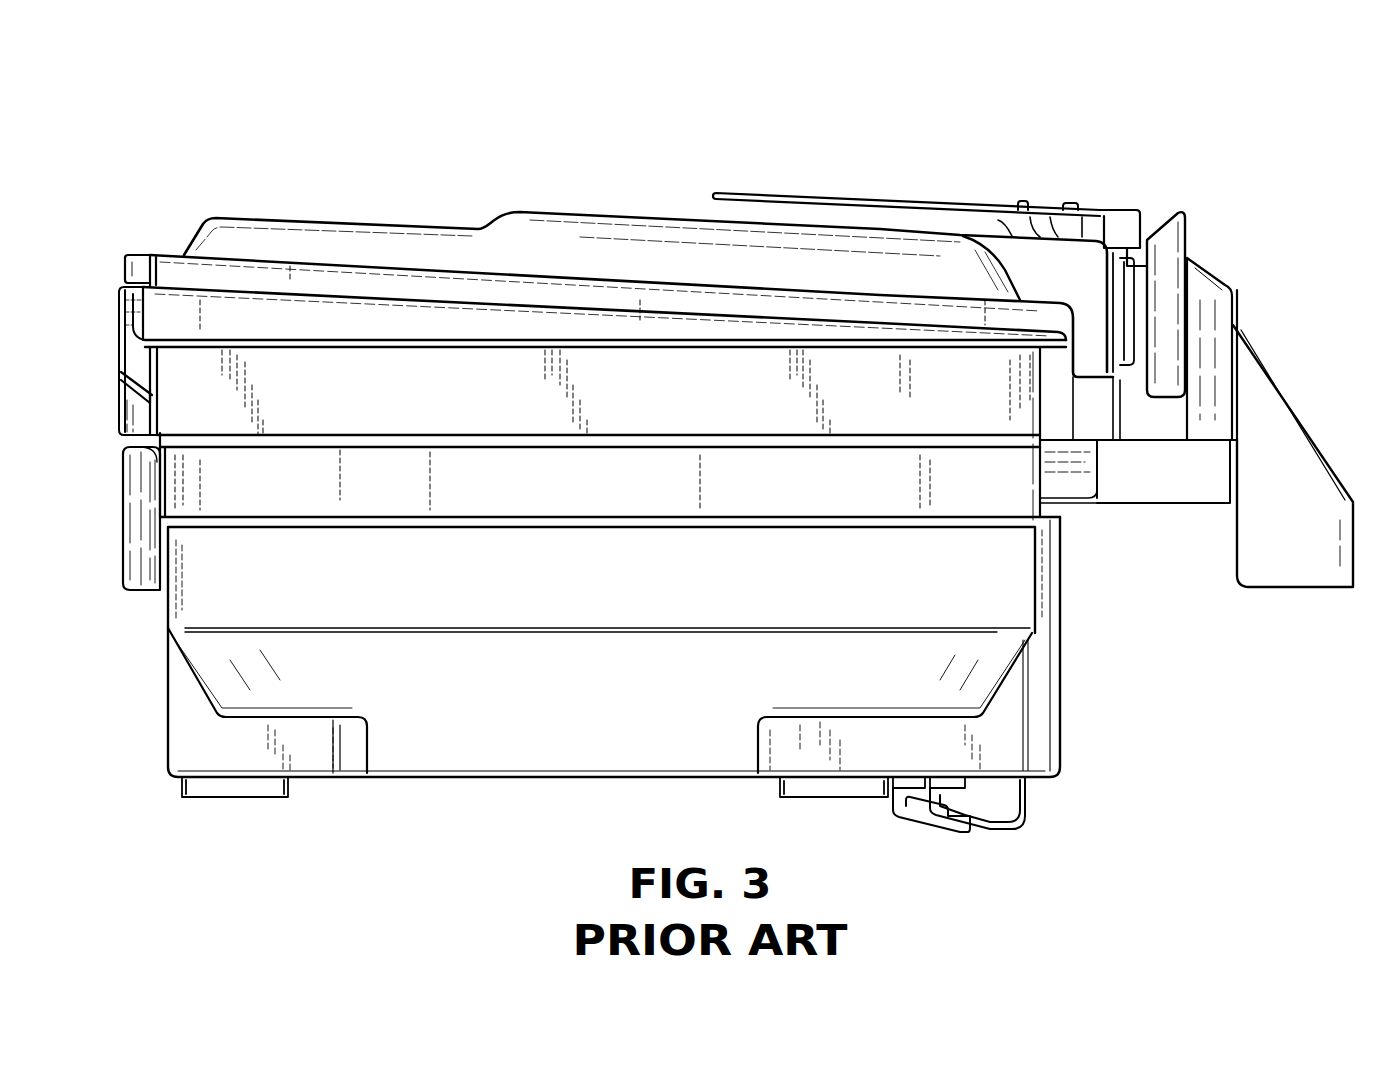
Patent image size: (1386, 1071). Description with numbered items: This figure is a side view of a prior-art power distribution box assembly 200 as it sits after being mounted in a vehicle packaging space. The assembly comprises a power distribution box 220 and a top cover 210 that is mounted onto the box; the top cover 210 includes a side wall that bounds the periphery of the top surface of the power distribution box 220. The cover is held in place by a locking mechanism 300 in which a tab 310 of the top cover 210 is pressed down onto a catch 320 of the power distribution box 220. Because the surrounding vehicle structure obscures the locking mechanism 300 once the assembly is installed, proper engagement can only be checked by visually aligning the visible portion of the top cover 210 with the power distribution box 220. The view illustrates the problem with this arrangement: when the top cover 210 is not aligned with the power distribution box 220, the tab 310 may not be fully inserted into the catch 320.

The power distribution box assembly 200 is at (406, 108).
The top cover 210 is at (522, 240).
The power distribution box 220 is at (630, 588).
The locking mechanism 300 is at (75, 205).
The tab 310 is at (139, 269).
The catch 320 is at (126, 375).